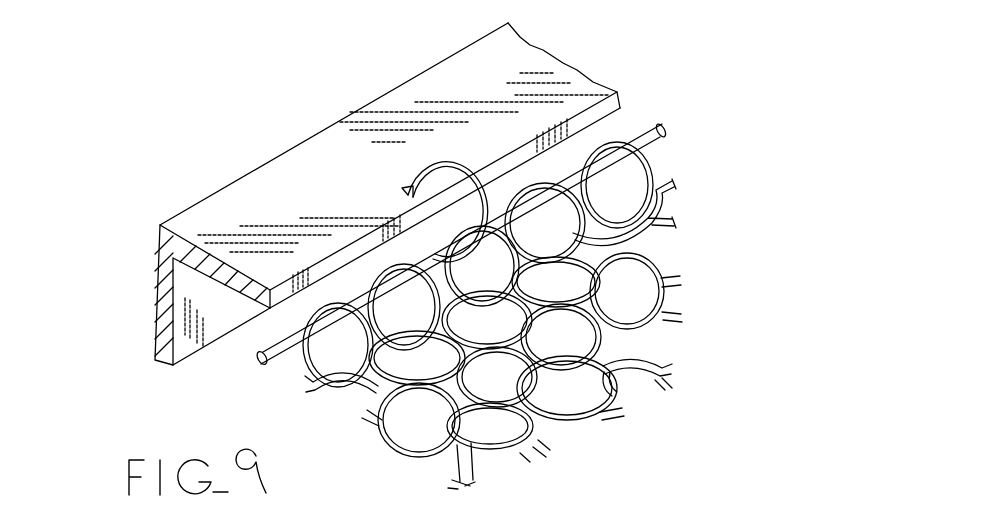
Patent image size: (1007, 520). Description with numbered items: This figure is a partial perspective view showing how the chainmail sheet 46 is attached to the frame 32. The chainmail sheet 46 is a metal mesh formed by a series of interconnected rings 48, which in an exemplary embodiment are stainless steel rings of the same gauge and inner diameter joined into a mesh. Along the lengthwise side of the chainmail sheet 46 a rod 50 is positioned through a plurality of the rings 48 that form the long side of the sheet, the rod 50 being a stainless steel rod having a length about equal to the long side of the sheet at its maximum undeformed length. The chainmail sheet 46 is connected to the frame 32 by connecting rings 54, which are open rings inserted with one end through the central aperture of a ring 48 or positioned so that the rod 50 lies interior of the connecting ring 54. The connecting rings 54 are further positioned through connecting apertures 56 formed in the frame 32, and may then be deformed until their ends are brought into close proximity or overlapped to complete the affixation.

The frame 32 is at (331, 194).
The chainmail sheet 46 is at (579, 304).
The rings 48 is at (665, 150).
The rod 50 is at (272, 366).
The connecting rings 54 is at (481, 202).
The connecting apertures 56 is at (412, 186).